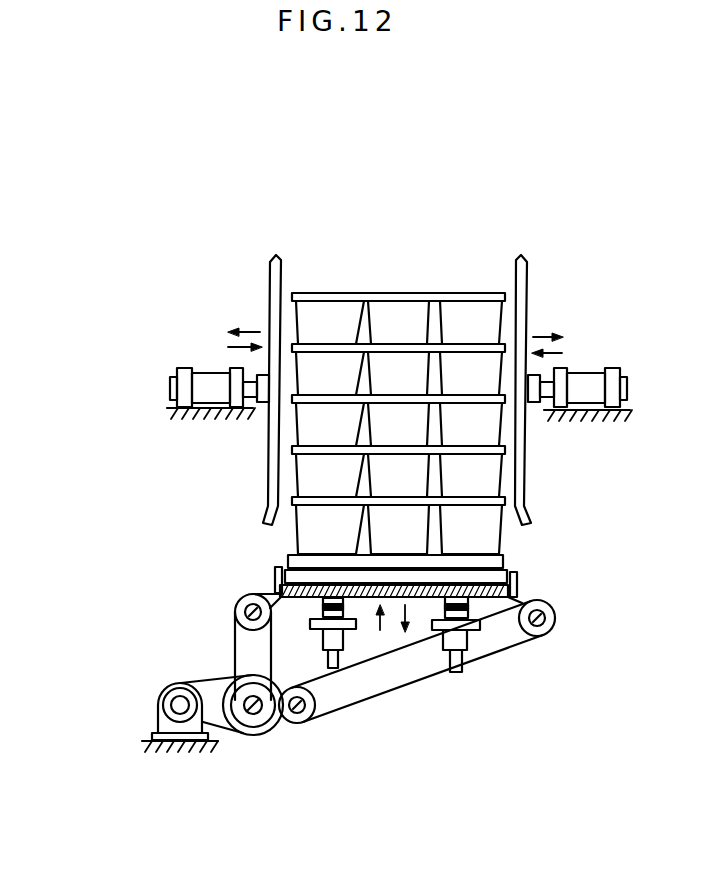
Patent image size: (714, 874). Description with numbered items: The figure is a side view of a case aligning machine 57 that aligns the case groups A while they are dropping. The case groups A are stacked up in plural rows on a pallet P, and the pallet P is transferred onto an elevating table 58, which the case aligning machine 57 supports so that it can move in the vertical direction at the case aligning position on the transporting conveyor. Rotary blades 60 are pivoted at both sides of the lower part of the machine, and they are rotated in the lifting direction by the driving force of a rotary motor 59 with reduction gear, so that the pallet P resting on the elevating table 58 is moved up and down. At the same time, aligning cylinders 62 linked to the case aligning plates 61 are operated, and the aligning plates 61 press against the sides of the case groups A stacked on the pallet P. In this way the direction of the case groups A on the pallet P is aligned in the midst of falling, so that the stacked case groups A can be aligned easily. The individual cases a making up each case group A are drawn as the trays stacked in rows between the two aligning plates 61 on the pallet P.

The case aligning machine 57 is at (124, 388).
The elevating table 58 is at (490, 580).
The rotary motor with reduction gear 59 is at (158, 706).
The rotary blades 60 is at (273, 593).
The case aligning plates 61 is at (270, 317).
The aligning cylinders 62 is at (210, 373).
The case group A is at (345, 285).
The pallet P is at (307, 555).
The tray a is at (302, 470).